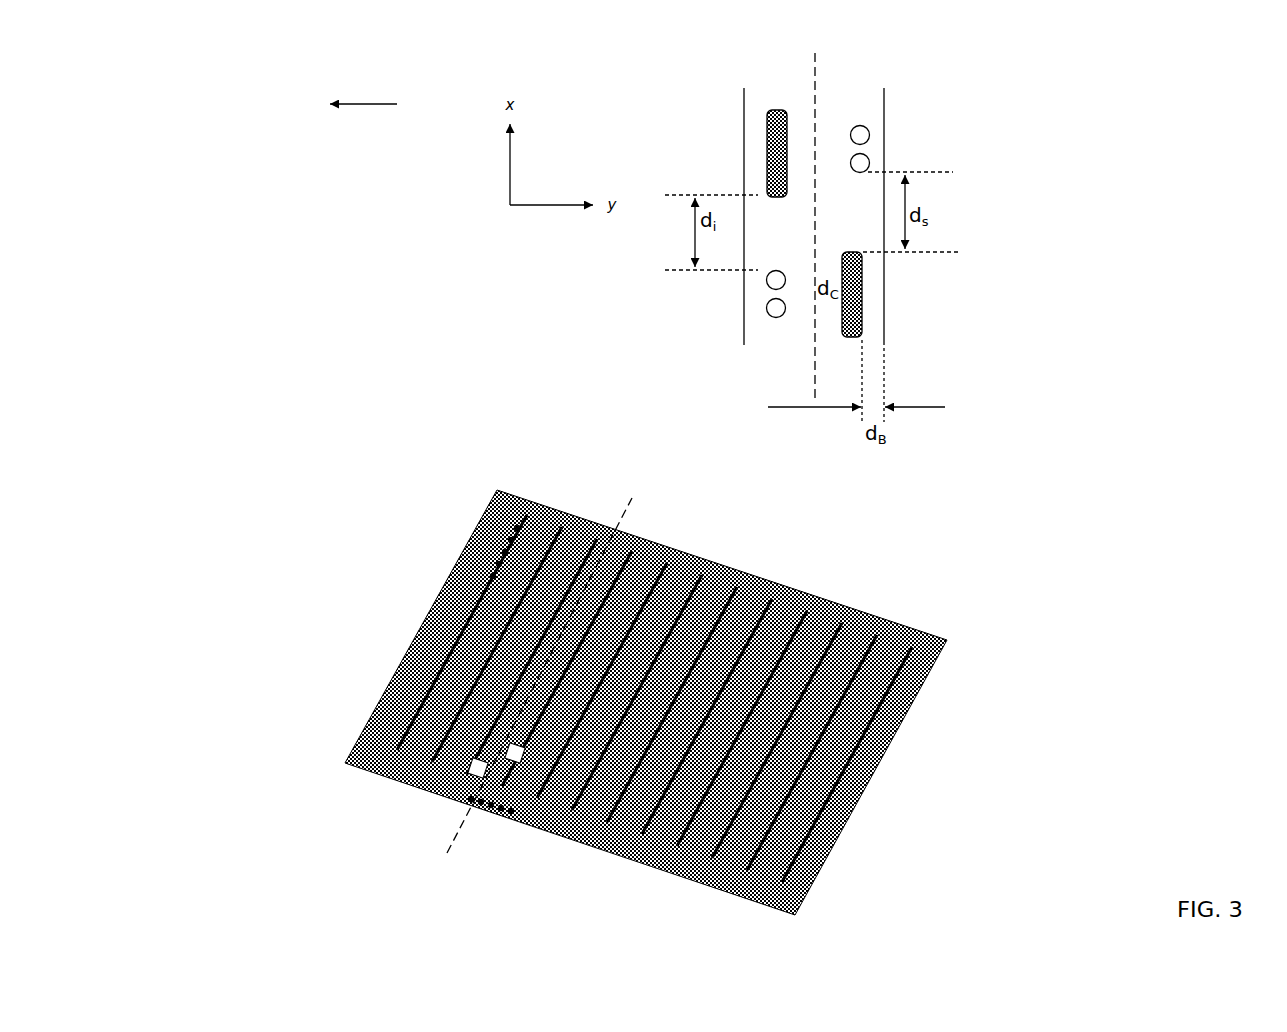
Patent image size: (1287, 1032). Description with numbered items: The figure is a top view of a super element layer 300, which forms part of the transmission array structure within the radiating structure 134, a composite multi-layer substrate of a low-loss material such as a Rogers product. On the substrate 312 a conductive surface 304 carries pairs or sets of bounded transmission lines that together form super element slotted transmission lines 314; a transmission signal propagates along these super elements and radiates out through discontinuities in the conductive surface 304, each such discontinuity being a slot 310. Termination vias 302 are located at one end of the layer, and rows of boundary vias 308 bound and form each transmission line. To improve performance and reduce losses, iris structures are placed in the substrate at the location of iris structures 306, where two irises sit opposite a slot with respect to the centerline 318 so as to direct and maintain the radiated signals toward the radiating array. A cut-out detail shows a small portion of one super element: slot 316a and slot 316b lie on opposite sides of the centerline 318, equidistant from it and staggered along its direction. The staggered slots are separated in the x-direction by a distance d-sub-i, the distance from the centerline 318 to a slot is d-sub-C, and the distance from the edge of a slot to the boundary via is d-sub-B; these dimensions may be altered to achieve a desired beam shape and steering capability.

The super element layer 300 is at (543, 466).
The radiating structure 134 is at (666, 611).
The termination vias 302 is at (510, 546).
The conductive surface 304 is at (412, 624).
The location of iris structures 306 is at (499, 746).
The boundary vias 308 is at (495, 808).
The slot 310 is at (798, 814).
The substrate 312 is at (919, 702).
The super element slotted transmission lines 314 is at (881, 632).
The slot 316a is at (864, 294).
The slot 316b is at (766, 152).
The centerline 318 is at (631, 520).